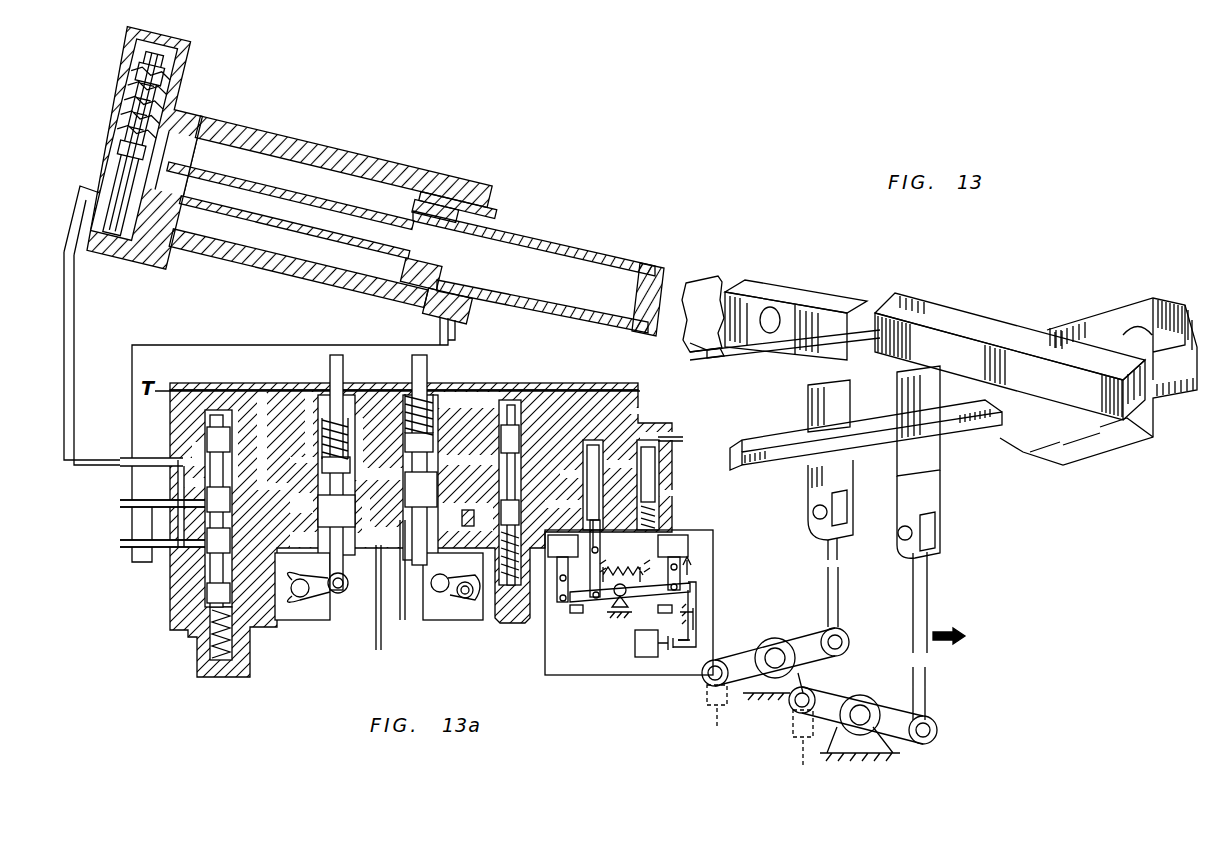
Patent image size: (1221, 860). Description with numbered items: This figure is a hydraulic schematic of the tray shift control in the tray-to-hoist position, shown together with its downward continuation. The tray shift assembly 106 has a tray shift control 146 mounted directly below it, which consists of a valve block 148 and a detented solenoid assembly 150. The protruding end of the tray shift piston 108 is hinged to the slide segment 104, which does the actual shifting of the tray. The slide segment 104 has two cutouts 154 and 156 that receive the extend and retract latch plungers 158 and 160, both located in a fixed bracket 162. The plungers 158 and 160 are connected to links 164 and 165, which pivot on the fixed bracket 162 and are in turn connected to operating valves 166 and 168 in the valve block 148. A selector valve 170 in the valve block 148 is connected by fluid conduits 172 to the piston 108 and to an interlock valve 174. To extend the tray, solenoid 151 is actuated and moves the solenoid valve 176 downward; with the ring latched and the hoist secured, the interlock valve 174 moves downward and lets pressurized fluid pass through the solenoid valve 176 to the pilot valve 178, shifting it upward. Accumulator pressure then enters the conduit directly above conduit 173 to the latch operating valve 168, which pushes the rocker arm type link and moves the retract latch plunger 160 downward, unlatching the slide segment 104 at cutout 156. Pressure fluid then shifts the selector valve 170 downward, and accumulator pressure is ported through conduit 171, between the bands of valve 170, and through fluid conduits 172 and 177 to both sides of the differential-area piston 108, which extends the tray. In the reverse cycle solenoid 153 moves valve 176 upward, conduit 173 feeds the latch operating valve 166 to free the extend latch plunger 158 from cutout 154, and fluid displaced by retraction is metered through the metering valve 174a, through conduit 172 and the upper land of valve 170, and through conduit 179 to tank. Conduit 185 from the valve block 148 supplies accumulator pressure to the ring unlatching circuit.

In FIG. 13, the slide segment 104 is at (1010, 356).
In FIG. 13, the tray shift assembly 106 is at (918, 285).
In FIG. 13, the tray shift piston 108 is at (547, 238).
In FIG. 13A, the tray shift control 146 is at (352, 632).
In FIG. 13A, the valve block 148 is at (255, 387).
In FIG. 13A, the detented solenoid assembly 150 is at (629, 597).
In FIG. 13A, the solenoid 151 is at (677, 562).
In FIG. 13A, the solenoid 153 is at (567, 568).
In FIG. 13, the cutout 154 is at (826, 403).
In FIG. 13, the cutout 156 is at (1130, 424).
In FIG. 13, the extend latch plunger 158 is at (815, 493).
In FIG. 13, the retract latch plunger 160 is at (932, 500).
In FIG. 13, the fixed bracket 162 is at (957, 427).
In FIG. 13, the link 164 is at (738, 676).
In FIG. 13, the link 165 is at (889, 706).
In FIG. 13, the operating valve 166 is at (712, 697).
In FIG. 13A, the operating valve 166 is at (333, 366).
In FIG. 13, the operating valve 168 is at (797, 732).
In FIG. 13A, the operating valve 168 is at (429, 370).
In FIG. 13A, the selector valve 170 is at (216, 440).
In FIG. 13A, the conduit 171 is at (160, 500).
In FIG. 13, the fluid conduit 172 is at (70, 276).
In FIG. 13A, the conduit 173 is at (683, 437).
In FIG. 13A, the interlock valve 174 is at (659, 455).
In FIG. 13, the metering valve 174a is at (123, 145).
In FIG. 13A, the solenoid valve 176 is at (590, 448).
In FIG. 13, the fluid conduit 177 is at (360, 339).
In FIG. 13A, the pilot valve 178 is at (508, 408).
In FIG. 13A, the conduit 179 is at (120, 541).
In FIG. 13A, the conduit 185 is at (387, 617).